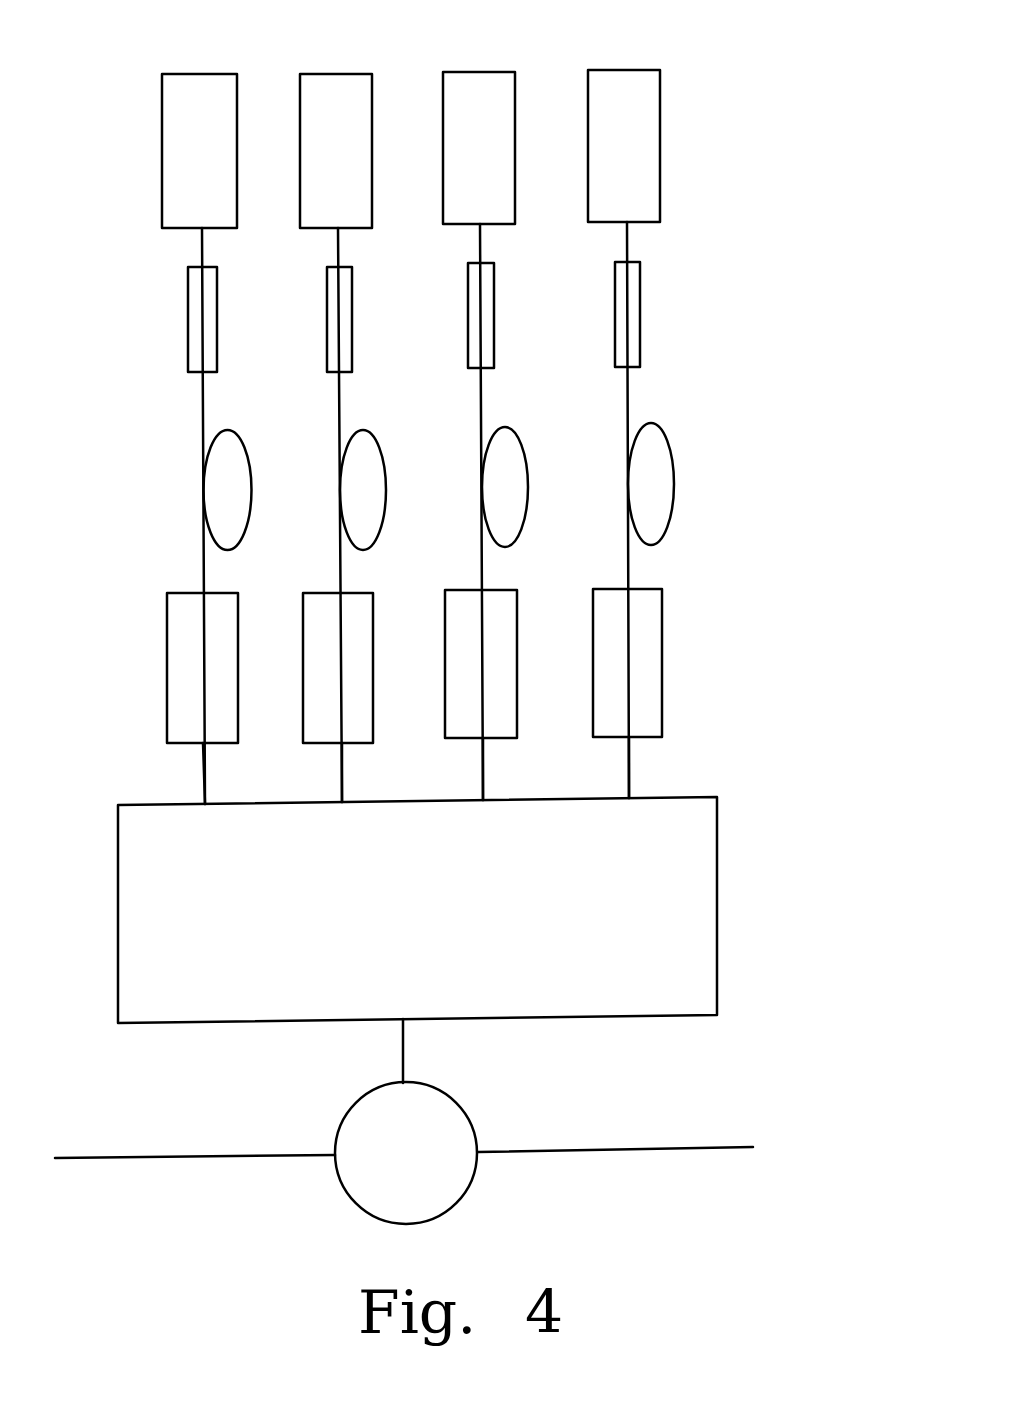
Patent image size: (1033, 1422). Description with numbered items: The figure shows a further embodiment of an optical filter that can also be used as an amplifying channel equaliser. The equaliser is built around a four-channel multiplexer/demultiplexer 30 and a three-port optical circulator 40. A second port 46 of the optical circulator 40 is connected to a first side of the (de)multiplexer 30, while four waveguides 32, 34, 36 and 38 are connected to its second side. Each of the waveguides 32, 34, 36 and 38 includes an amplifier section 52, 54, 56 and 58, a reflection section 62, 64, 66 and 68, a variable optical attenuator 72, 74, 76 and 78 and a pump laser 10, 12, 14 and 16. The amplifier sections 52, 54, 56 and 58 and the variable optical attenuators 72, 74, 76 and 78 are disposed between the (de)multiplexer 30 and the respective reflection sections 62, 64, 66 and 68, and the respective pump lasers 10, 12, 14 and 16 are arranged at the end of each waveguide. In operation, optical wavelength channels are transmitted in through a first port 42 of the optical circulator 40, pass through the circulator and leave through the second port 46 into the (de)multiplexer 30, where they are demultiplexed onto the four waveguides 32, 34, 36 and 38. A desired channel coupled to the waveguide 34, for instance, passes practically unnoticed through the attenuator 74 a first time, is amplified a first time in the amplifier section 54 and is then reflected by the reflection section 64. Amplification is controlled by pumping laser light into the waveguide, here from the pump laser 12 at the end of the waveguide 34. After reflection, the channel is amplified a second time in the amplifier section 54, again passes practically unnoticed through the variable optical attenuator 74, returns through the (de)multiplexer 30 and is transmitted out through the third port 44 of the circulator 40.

The pump laser 10 is at (173, 152).
The pump laser 12 is at (323, 143).
The pump laser 14 is at (458, 143).
The pump laser 16 is at (607, 137).
The reflection section 62 is at (197, 318).
The reflection section 64 is at (327, 295).
The reflection section 66 is at (478, 298).
The reflection section 68 is at (623, 307).
The amplifier section 52 is at (238, 492).
The amplifier section 54 is at (373, 500).
The amplifier section 56 is at (517, 505).
The amplifier section 58 is at (663, 482).
The variable optical attenuator 72 is at (177, 670).
The variable optical attenuator 74 is at (325, 662).
The variable optical attenuator 76 is at (460, 660).
The variable optical attenuator 78 is at (608, 653).
The waveguide 32 is at (205, 790).
The waveguide 34 is at (347, 788).
The waveguide 36 is at (490, 778).
The waveguide 38 is at (638, 772).
The four-channel multiplexer/demultiplexer 30 is at (684, 908).
The second port 46 is at (403, 1058).
The three-port optical circulator 40 is at (352, 1173).
The first port 42 is at (128, 1160).
The third port 44 is at (708, 1148).